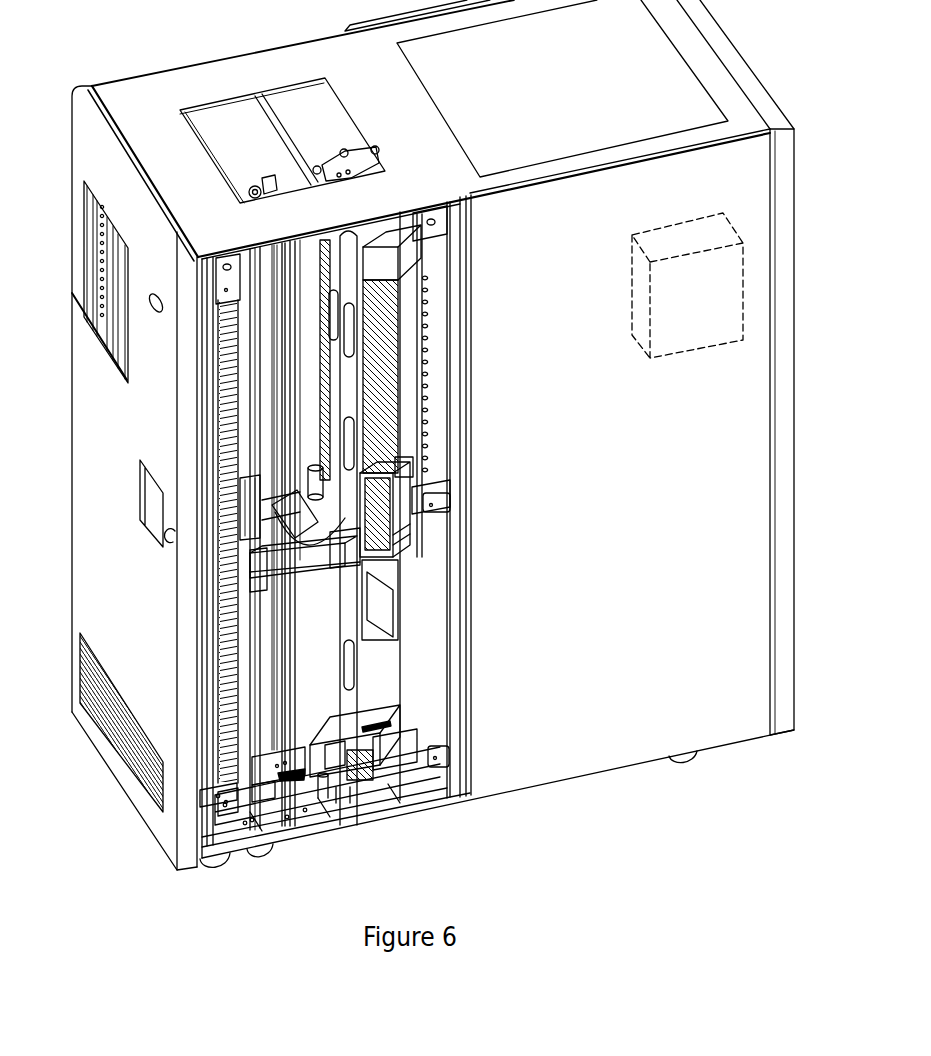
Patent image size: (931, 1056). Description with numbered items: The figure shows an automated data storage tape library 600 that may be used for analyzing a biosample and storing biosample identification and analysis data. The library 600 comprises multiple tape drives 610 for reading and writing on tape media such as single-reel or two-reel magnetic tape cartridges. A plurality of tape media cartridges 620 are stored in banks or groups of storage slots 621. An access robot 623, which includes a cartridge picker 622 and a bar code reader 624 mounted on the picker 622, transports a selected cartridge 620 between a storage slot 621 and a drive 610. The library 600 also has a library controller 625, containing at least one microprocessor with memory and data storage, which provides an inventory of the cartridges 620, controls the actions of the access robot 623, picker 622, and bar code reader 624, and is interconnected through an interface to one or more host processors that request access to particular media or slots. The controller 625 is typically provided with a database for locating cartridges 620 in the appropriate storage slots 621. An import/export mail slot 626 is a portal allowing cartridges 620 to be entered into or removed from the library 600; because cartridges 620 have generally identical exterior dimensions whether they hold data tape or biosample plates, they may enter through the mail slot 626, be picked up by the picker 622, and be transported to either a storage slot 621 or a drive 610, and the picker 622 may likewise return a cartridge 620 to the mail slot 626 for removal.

The automated data storage tape library 600 is at (246, 64).
The tape drive 610 is at (407, 557).
The tape media cartridge 620 is at (397, 383).
The storage slot 621 is at (220, 372).
The cartridge picker 622 is at (355, 557).
The access robot 623 is at (295, 786).
The bar code reader 624 is at (267, 492).
The library controller 625 is at (632, 290).
The import/export mail slot 626 is at (113, 259).